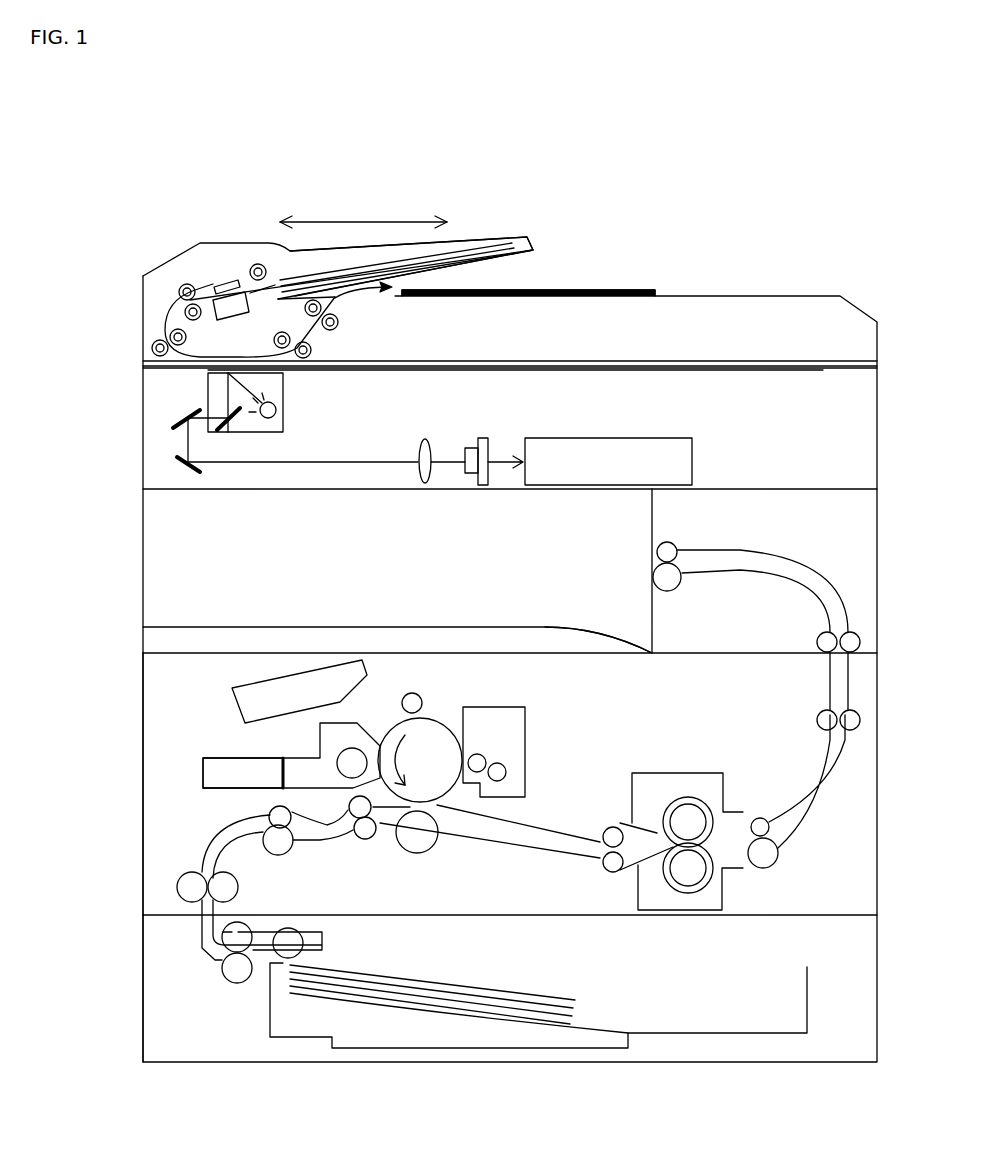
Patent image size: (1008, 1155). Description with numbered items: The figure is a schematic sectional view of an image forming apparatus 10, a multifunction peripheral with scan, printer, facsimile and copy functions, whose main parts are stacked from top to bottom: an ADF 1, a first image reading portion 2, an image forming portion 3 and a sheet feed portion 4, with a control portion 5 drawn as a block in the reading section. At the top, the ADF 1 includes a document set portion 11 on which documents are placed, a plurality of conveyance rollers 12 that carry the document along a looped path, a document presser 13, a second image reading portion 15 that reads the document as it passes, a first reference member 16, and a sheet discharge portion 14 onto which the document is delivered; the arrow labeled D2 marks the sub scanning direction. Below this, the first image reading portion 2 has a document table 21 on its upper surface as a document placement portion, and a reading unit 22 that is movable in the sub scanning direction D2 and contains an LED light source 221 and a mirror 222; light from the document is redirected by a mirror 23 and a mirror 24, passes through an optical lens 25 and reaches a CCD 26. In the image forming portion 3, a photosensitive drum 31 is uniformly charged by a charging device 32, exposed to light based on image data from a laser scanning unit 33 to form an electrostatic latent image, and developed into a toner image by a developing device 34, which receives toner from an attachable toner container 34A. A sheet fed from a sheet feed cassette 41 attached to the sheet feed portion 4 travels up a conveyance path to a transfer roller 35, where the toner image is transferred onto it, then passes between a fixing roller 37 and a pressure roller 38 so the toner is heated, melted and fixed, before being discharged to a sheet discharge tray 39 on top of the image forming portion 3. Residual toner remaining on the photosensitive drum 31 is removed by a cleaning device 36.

The image forming apparatus 10 is at (92, 268).
The ADF 1 is at (143, 296).
The document set portion 11 is at (490, 240).
The conveyance rollers 12 is at (187, 284).
The document presser 13 is at (222, 355).
The sheet discharge portion 14 is at (672, 294).
The second image reading portion 15 is at (255, 300).
The first reference member 16 is at (230, 283).
The sub scanning direction D2 is at (368, 222).
The first image reading portion 2 is at (143, 437).
The document table 21 is at (668, 372).
The reading unit 22 is at (283, 412).
The LED light source 221 is at (283, 403).
The mirror 222 is at (237, 425).
The mirror 23 is at (189, 430).
The mirror 24 is at (283, 475).
The optical lens 25 is at (428, 438).
The CCD 26 is at (488, 440).
The control portion 5 is at (598, 438).
The sheet discharge tray 39 is at (552, 622).
The image forming portion 3 is at (143, 695).
The photosensitive drum 31 is at (440, 718).
The charging device 32 is at (398, 703).
The laser scanning unit 33 is at (232, 705).
The developing device 34 is at (318, 735).
The toner container 34A is at (215, 790).
The transfer roller 35 is at (420, 855).
The cleaning device 36 is at (490, 707).
The fixing roller 37 is at (707, 802).
The pressure roller 38 is at (648, 900).
The sheet feed portion 4 is at (143, 991).
The sheet feed cassette 41 is at (270, 1013).